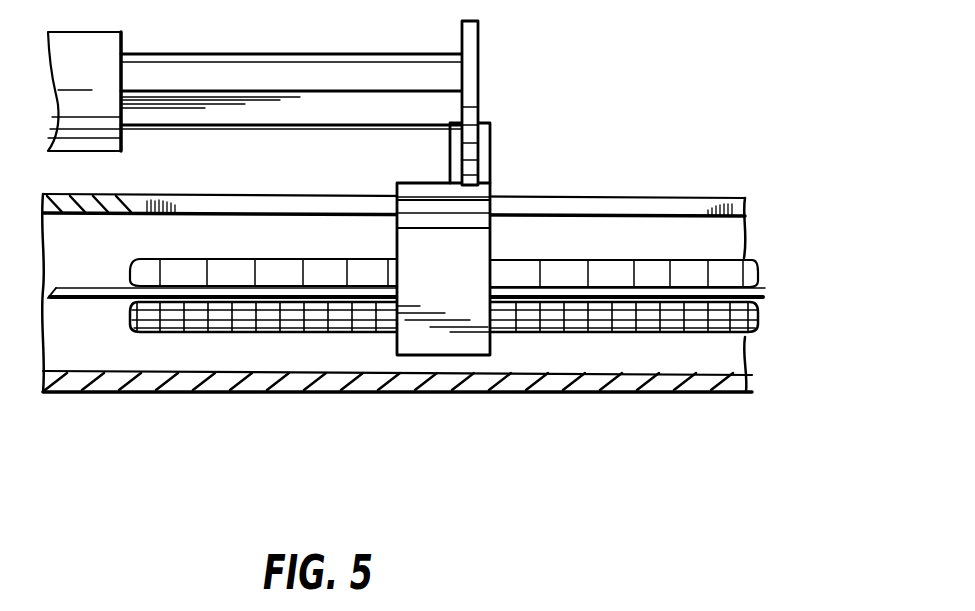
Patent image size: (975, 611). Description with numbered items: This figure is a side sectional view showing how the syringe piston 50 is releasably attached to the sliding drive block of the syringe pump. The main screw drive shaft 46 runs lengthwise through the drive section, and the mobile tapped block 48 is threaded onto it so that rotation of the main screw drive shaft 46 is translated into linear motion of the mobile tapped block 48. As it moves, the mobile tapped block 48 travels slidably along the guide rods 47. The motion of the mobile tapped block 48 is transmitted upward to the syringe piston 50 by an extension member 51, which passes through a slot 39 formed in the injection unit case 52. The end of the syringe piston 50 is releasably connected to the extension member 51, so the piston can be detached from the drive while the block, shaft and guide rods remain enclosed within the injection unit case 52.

The slot 39 is at (682, 205).
The main screw drive shaft 46 is at (743, 273).
The guide rods 47 is at (763, 298).
The mobile tapped block 48 is at (468, 335).
The syringe piston 50 is at (478, 91).
The extension member 51 is at (483, 170).
The injection unit case 52 is at (293, 380).